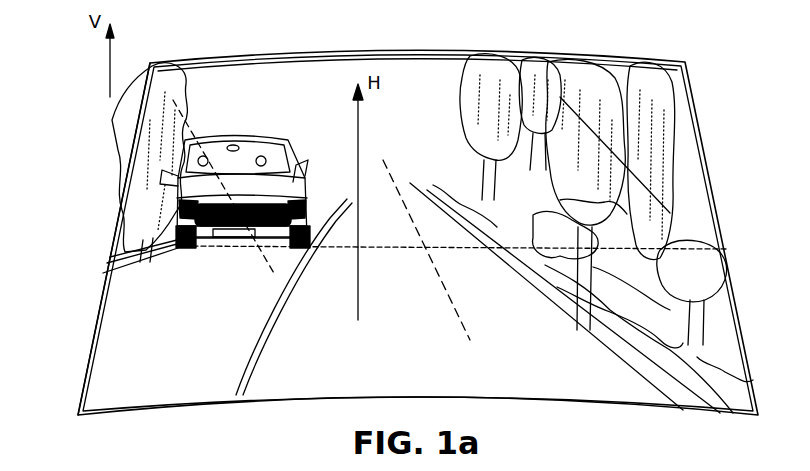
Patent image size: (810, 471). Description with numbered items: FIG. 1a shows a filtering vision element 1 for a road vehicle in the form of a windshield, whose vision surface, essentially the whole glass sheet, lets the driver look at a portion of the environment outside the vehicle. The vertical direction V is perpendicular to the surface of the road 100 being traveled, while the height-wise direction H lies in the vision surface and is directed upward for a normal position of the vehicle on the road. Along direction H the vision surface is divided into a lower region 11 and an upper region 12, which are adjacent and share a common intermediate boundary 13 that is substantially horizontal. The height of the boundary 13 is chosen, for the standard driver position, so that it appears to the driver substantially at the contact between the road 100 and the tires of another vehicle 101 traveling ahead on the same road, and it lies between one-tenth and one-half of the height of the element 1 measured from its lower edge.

The vision element 1 is at (617, 53).
The road surface 100 is at (123, 318).
The other vehicle 101 is at (252, 138).
The lower region 11 is at (559, 375).
The upper region 12 is at (537, 203).
The intermediate boundary 13 is at (380, 244).